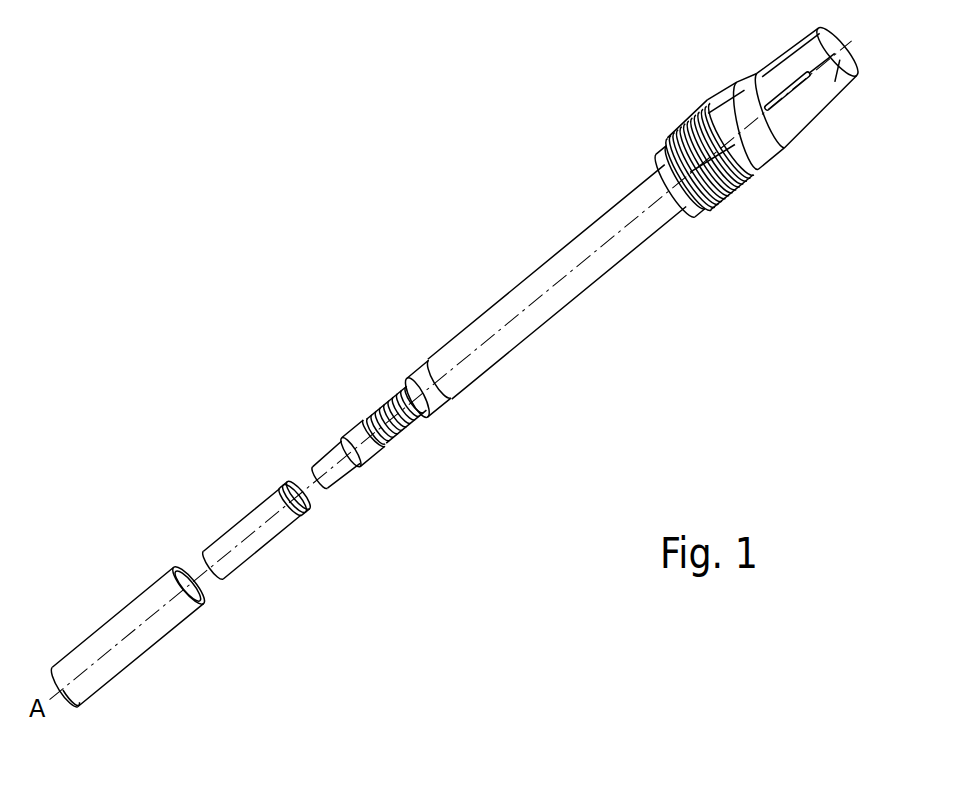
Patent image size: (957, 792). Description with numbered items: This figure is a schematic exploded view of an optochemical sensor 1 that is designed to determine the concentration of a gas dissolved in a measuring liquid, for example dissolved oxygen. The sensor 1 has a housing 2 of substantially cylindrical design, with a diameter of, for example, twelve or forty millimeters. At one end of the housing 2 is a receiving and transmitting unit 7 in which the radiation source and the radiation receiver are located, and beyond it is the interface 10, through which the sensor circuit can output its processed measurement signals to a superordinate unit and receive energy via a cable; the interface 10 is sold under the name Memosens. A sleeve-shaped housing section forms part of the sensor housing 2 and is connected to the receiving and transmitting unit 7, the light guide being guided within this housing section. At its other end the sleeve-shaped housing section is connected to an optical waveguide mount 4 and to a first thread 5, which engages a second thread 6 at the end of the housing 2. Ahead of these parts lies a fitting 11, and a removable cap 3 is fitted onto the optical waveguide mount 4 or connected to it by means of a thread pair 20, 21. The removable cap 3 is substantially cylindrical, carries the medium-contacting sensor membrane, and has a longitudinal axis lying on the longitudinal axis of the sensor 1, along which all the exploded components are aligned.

The sensor 1 is at (442, 232).
The housing 2 is at (547, 310).
The removable cap 3 is at (145, 636).
The optical waveguide mount 4 is at (250, 576).
The first thread 5 is at (303, 507).
The second thread 6 is at (445, 395).
The receiving and transmitting unit 7 is at (692, 212).
The interface 10 is at (837, 80).
The fitting 11 is at (353, 433).
The thread pair 20 is at (220, 578).
The thread pair 21 is at (198, 600).